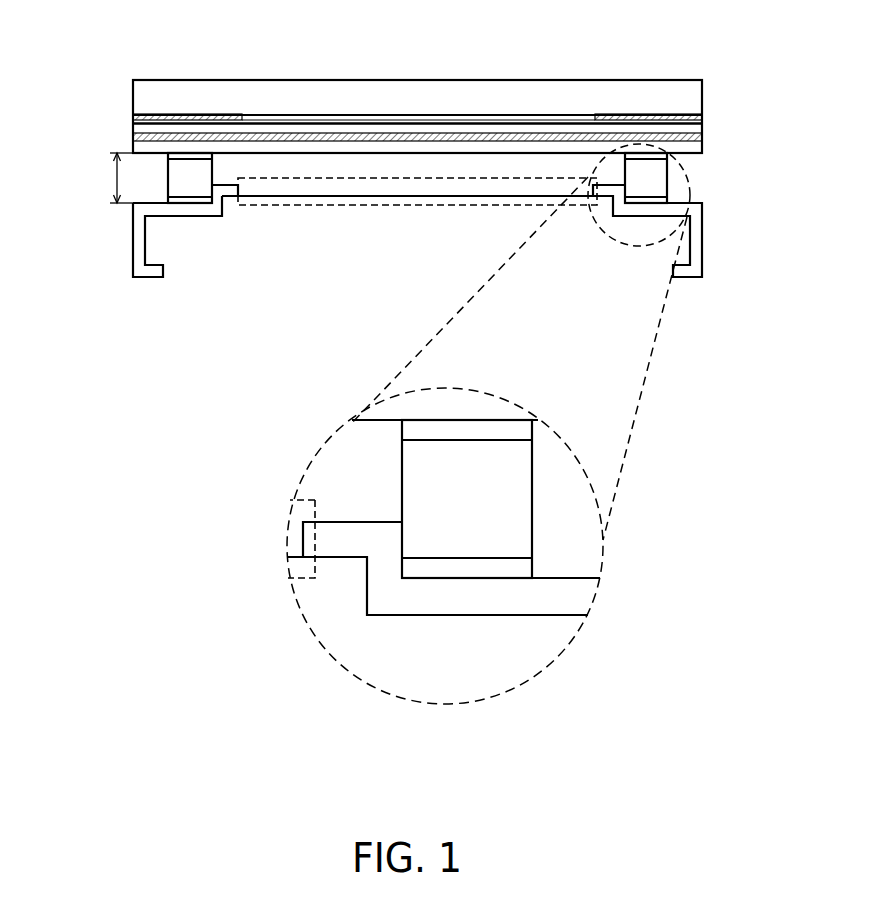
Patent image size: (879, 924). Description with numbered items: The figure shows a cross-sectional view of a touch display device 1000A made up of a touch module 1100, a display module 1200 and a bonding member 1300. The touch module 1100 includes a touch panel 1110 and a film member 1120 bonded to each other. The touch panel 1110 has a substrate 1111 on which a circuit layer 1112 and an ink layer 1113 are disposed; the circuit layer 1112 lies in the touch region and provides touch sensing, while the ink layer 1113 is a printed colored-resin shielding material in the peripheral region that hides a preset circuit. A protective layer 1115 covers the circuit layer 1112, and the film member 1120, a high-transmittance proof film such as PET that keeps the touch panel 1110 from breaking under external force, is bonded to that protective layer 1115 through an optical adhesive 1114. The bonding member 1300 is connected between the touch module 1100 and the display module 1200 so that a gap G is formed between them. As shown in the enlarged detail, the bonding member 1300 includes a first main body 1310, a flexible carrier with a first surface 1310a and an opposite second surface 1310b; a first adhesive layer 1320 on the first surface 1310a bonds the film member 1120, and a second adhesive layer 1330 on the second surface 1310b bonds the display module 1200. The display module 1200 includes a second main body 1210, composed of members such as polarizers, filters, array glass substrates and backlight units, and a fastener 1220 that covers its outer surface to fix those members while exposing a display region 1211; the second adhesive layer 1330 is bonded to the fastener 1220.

The touch display device 1000A is at (735, 748).
The touch module 1100 is at (720, 95).
The touch panel 1110 is at (131, 80).
The substrate 1111 is at (298, 98).
The circuit layer 1112 is at (427, 121).
The ink layer 1113 is at (200, 114).
The optical adhesive 1114 is at (690, 137).
The protective layer 1115 is at (520, 119).
The film member 1120 is at (688, 148).
The display module 1200 is at (118, 235).
The second main body 1210 is at (378, 245).
The display region 1211 is at (280, 206).
The fastener 1220 is at (688, 279).
The bonding member 1300 is at (698, 183).
The first main body 1310 is at (425, 472).
The first surface 1310a is at (487, 438).
The second surface 1310b is at (440, 560).
The first adhesive layer 1320 is at (453, 432).
The second adhesive layer 1330 is at (480, 568).
The gap G is at (110, 178).